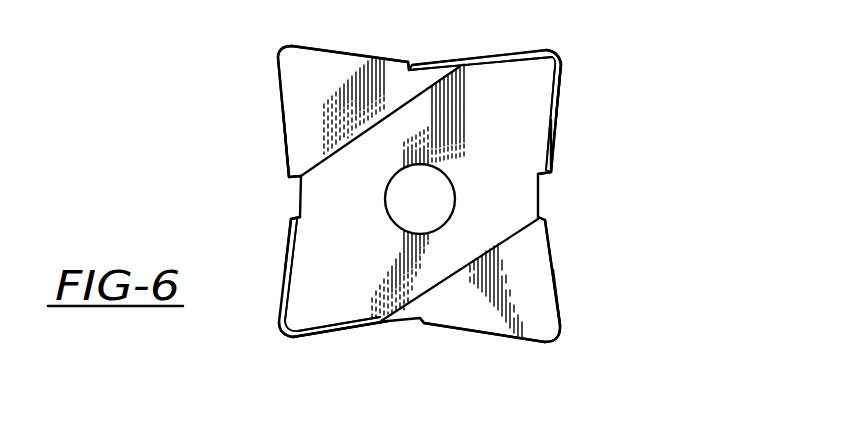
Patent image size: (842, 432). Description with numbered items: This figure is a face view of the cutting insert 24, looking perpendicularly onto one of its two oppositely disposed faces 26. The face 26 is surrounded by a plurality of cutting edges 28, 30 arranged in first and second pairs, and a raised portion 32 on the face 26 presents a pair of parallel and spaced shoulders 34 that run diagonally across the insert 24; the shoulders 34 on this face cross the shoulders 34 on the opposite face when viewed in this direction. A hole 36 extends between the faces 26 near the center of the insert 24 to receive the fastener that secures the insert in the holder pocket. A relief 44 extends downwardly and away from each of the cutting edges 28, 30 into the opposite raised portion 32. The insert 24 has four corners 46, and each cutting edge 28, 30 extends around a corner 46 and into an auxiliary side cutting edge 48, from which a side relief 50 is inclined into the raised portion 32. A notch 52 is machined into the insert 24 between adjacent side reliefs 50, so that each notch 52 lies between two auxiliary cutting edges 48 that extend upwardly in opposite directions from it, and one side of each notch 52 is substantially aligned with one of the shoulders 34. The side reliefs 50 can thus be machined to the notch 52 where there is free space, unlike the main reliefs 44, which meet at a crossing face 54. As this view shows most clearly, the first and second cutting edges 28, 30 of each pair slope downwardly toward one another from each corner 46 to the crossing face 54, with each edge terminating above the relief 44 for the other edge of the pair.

The cutting insert 24 is at (614, 146).
The face 26 is at (306, 80).
The first cutting edge 28 is at (540, 45).
The second cutting edge 30 is at (336, 50).
The raised portion 32 is at (550, 97).
The shoulder 34 is at (390, 108).
The hole 36 is at (392, 200).
The relief 44 is at (497, 58).
The corner 46 is at (282, 57).
The auxiliary side cutting edge 48 is at (282, 138).
The side relief 50 is at (282, 282).
The notch 52 is at (302, 180).
The crossing face 54 is at (410, 65).